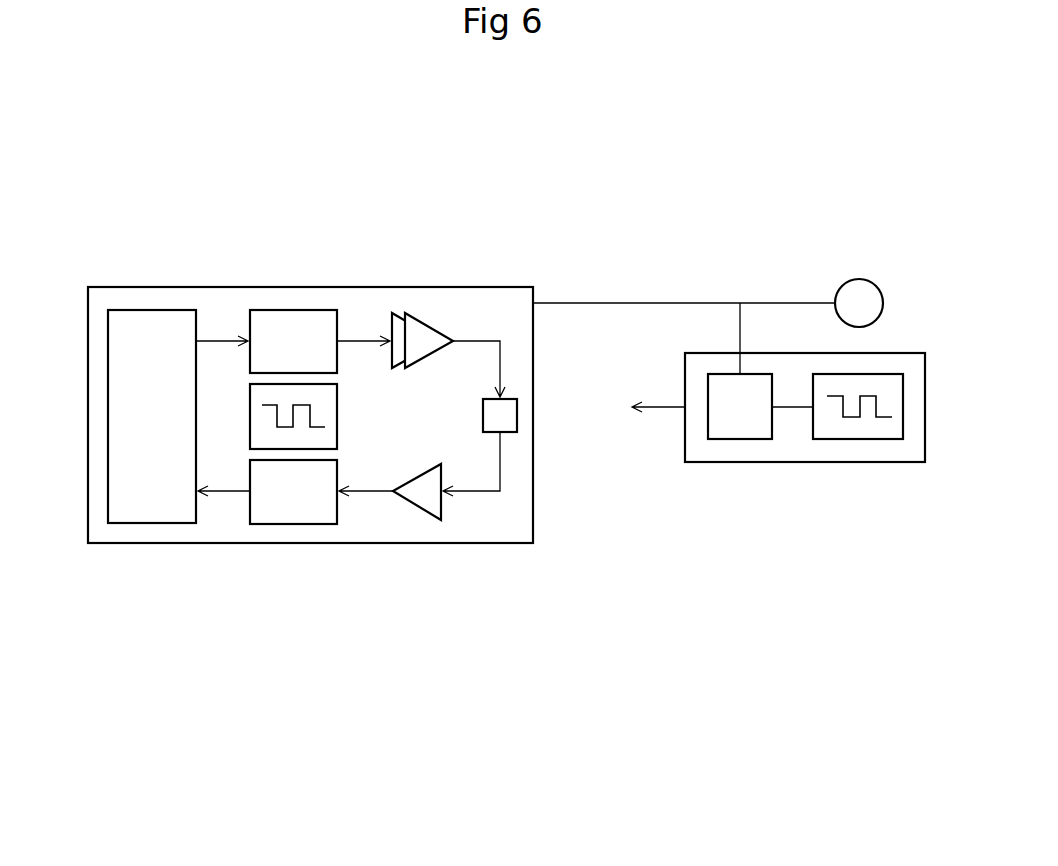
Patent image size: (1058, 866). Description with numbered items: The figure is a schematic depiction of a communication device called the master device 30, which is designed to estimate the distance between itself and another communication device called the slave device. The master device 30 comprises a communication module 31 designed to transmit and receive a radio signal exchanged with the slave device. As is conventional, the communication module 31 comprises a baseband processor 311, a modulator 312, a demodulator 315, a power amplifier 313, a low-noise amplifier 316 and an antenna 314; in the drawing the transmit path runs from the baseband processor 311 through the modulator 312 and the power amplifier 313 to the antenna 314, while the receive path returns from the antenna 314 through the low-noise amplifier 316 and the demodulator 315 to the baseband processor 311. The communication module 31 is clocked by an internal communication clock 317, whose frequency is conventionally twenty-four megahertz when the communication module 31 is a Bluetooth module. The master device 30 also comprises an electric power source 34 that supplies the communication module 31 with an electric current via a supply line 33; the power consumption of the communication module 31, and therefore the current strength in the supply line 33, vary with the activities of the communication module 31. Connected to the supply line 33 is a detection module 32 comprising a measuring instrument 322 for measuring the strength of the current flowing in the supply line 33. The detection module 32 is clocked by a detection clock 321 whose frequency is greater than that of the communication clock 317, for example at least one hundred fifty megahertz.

The master device 30 is at (271, 181).
The communication module 31 is at (367, 543).
The baseband processor 311 is at (133, 310).
The modulator 312 is at (293, 310).
The power amplifier 313 is at (429, 322).
The antenna 314 is at (517, 412).
The demodulator 315 is at (295, 524).
The low-noise amplifier 316 is at (415, 510).
The communication clock 317 is at (250, 416).
The detection module 32 is at (802, 462).
The detection clock 321 is at (870, 439).
The measuring instrument 322 is at (738, 439).
The supply line 33 is at (638, 303).
The electric power source 34 is at (858, 279).